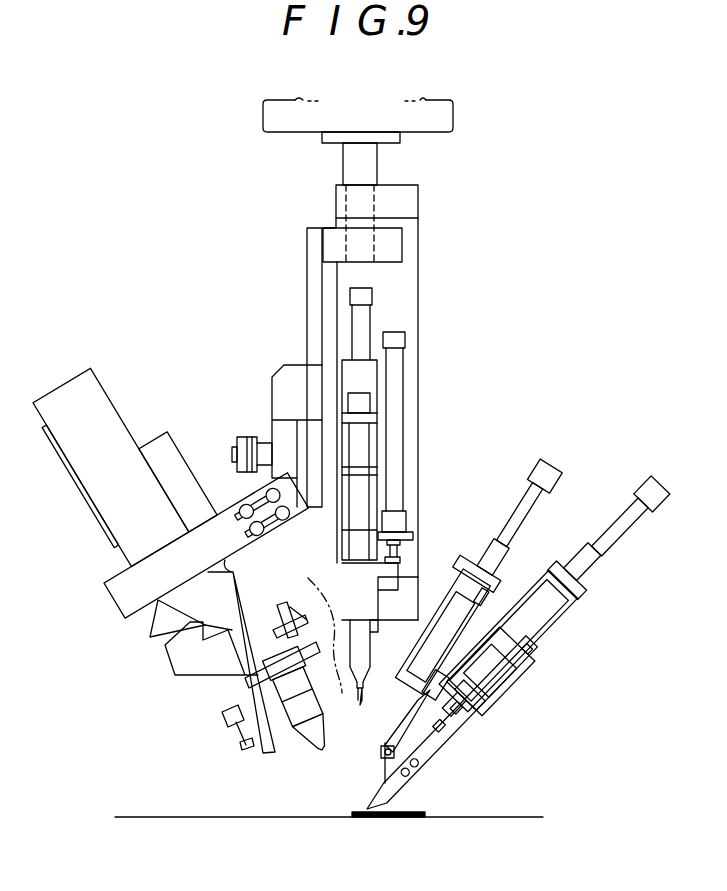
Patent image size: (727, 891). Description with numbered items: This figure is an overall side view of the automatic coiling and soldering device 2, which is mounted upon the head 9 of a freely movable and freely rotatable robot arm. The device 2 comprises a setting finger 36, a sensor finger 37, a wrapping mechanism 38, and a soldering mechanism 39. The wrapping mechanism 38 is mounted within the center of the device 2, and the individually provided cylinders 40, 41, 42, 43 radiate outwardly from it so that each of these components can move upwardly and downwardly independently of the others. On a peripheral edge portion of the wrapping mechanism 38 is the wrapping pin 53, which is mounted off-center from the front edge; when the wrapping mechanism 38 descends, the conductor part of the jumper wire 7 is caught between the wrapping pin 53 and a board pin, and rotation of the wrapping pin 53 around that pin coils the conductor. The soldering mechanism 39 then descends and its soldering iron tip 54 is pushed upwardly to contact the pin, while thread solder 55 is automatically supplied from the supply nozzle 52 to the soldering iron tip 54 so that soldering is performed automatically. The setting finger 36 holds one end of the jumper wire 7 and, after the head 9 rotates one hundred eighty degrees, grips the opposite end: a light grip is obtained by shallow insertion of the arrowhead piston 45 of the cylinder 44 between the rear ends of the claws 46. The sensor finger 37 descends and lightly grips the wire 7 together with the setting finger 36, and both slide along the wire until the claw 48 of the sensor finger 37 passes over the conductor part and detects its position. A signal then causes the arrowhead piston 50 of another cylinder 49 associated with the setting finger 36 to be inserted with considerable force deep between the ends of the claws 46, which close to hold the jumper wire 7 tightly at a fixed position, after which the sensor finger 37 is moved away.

The automatic coiling and soldering device 2 is at (513, 209).
The jumper wire 7 is at (414, 809).
The head 9 is at (449, 118).
The setting finger 36 is at (559, 628).
The sensor finger 37 is at (466, 560).
The wrapping mechanism 38 is at (423, 390).
The soldering mechanism 39 is at (193, 664).
The cylinder 40 is at (611, 539).
The cylinder 41 is at (531, 497).
The cylinder 42 is at (363, 320).
The cylinder 43 is at (181, 466).
The cylinder 44 is at (500, 643).
The arrowhead piston 45 is at (462, 686).
The claws 46 is at (393, 818).
The claw 48 is at (382, 762).
The cylinder 49 is at (506, 669).
The arrowhead piston 50 is at (467, 684).
The supply nozzle 52 is at (383, 760).
The wrapping pin 53 is at (359, 695).
The soldering iron tip 54 is at (308, 747).
The thread solder 55 is at (319, 625).